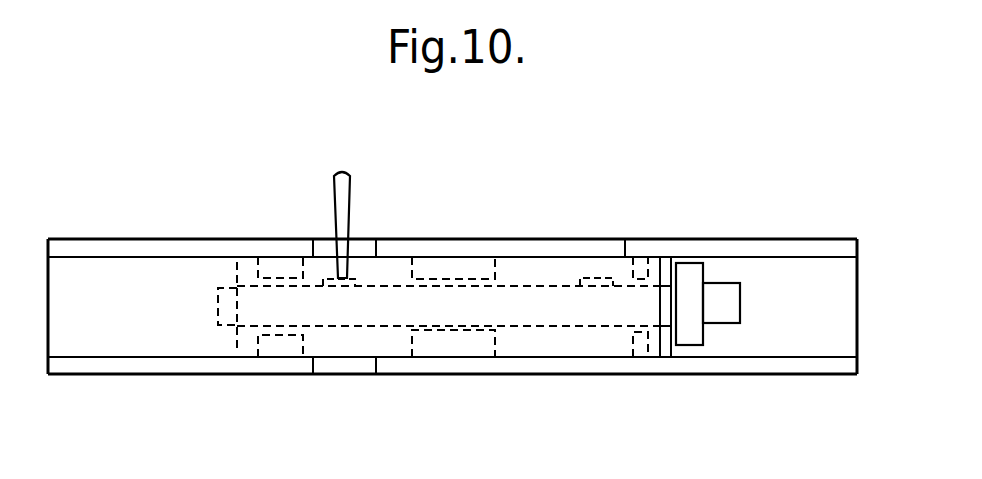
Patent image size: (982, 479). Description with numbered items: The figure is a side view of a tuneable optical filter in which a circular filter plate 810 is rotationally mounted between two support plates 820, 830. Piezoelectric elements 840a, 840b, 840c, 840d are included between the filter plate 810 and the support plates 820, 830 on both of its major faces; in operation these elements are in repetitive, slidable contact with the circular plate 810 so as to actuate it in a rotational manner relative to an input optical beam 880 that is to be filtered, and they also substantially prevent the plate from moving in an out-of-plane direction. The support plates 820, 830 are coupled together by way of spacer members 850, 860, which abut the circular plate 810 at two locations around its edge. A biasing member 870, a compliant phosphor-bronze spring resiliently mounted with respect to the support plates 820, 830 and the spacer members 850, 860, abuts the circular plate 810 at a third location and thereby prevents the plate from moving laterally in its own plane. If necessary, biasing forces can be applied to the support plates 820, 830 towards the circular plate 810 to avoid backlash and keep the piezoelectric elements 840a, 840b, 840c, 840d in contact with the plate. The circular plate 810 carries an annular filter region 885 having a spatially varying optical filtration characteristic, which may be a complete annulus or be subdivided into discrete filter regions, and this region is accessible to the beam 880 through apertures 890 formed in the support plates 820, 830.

The circular filter plate 810 is at (728, 292).
The support plate 820 is at (96, 247).
The support plate 830 is at (822, 366).
The piezoelectric element 840a is at (450, 262).
The piezoelectric element 840b is at (645, 268).
The piezoelectric element 840c is at (474, 293).
The piezoelectric element 840d is at (277, 262).
The spacer member 850 is at (823, 312).
The spacer member 860 is at (137, 312).
The biasing member 870 is at (688, 292).
The input optical beam 880 is at (350, 200).
The annular filter region 885 is at (592, 280).
The aperture 890 is at (322, 245).